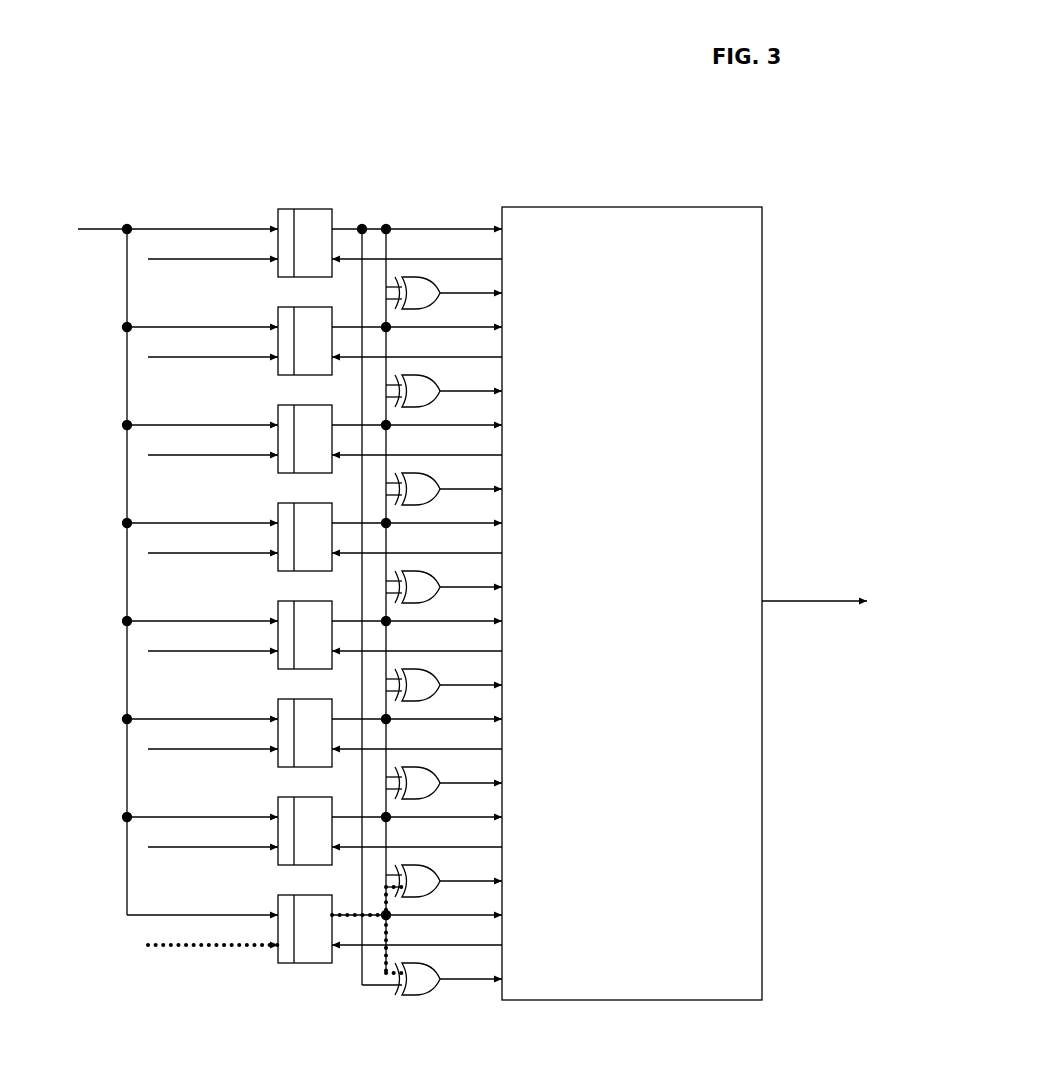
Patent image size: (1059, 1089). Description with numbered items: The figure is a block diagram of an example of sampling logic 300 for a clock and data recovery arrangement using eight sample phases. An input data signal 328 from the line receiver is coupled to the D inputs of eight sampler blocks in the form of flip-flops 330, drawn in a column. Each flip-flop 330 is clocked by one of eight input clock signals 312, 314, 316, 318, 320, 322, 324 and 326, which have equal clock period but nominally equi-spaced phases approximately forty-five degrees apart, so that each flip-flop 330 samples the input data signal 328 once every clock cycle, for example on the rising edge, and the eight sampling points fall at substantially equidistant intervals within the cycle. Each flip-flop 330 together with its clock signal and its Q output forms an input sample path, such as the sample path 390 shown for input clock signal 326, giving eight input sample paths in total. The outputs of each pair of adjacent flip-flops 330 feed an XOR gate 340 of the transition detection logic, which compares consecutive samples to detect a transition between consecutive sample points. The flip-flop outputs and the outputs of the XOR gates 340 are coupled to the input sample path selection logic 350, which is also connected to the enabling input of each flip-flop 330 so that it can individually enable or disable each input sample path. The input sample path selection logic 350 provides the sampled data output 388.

The sampling logic 300 is at (277, 100).
The input clock signal 312 is at (198, 270).
The input clock signal 314 is at (212, 372).
The input clock signal 316 is at (212, 470).
The input clock signal 318 is at (212, 568).
The input clock signal 320 is at (212, 666).
The input clock signal 322 is at (212, 764).
The input clock signal 324 is at (212, 862).
The input clock signal 326 is at (212, 960).
The input data signal 328 is at (90, 220).
The flip-flop 330 is at (300, 212).
The XOR gate 340 is at (429, 290).
The input sample path selection logic 350 is at (613, 212).
The sampled data output 388 is at (848, 598).
The sample path 390 is at (355, 908).